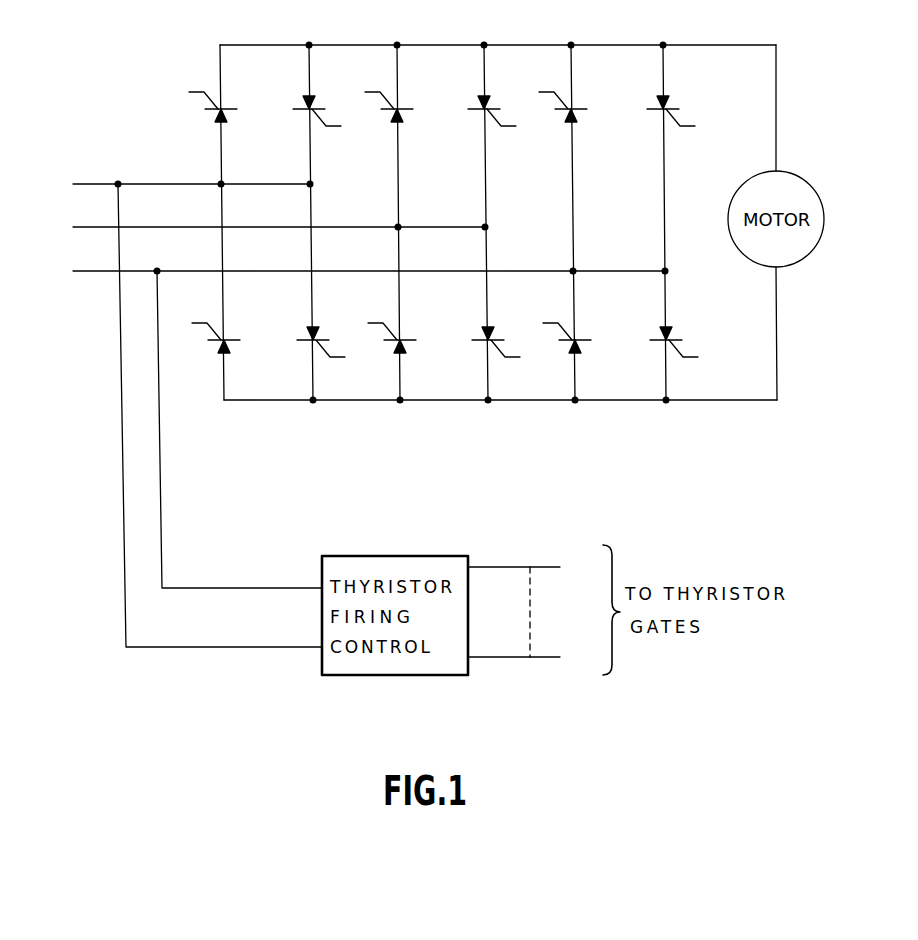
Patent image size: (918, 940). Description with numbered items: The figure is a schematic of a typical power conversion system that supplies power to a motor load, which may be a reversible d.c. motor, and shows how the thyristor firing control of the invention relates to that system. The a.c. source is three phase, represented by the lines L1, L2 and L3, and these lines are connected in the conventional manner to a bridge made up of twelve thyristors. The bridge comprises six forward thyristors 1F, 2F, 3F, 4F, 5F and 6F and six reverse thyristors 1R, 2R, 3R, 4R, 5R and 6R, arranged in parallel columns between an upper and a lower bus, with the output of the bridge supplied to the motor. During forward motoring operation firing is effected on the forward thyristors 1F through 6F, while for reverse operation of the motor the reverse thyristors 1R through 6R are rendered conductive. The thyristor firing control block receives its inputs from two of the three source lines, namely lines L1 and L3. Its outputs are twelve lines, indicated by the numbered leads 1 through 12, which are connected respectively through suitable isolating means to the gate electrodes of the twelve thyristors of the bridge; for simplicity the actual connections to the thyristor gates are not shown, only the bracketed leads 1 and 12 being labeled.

The forward thyristor 1F is at (204, 114).
The reverse thyristor 1R is at (324, 131).
The forward thyristor 3F is at (382, 90).
The reverse thyristor 3R is at (499, 130).
The forward thyristor 5F is at (557, 88).
The reverse thyristor 5R is at (695, 137).
The forward thyristor 4F is at (215, 321).
The reverse thyristor 4R is at (328, 362).
The forward thyristor 6F is at (390, 321).
The reverse thyristor 6R is at (503, 361).
The forward thyristor 2F is at (565, 321).
The reverse thyristor 2R is at (681, 361).
The thyristor gate output lead 1 is at (528, 568).
The thyristor gate output lead 12 is at (531, 658).
The source line L1 is at (170, 186).
The source line L2 is at (258, 232).
The source line L3 is at (348, 280).